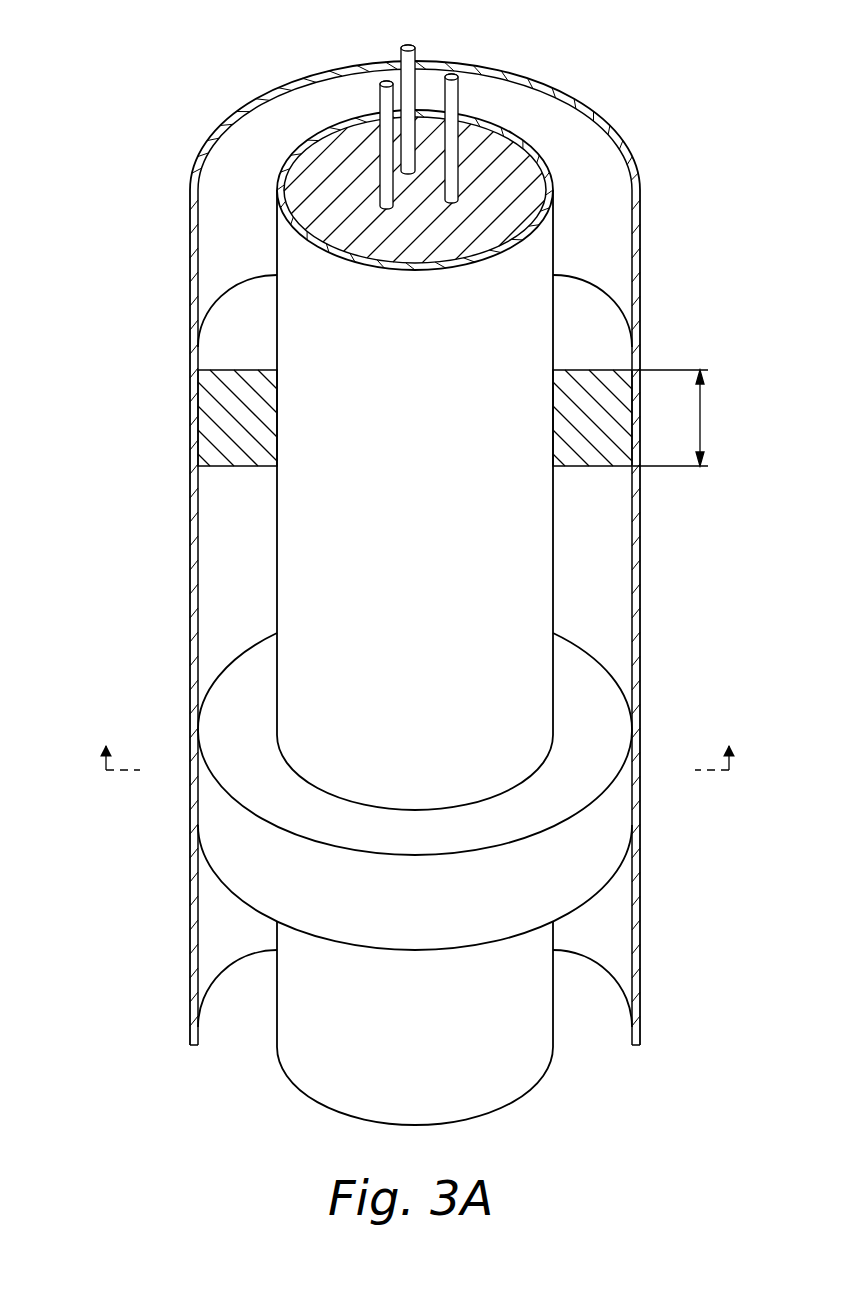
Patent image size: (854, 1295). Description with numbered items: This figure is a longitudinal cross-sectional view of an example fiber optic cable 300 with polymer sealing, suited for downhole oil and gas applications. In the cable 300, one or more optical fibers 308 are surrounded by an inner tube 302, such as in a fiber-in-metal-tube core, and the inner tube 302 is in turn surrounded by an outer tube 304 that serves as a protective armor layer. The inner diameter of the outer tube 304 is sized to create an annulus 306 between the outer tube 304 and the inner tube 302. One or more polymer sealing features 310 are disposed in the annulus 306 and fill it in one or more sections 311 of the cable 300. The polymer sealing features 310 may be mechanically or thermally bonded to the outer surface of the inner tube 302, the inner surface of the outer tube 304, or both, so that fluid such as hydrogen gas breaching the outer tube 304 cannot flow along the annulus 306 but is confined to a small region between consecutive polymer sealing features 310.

The fiber optic cable 300 is at (135, 59).
The inner tube 302 is at (335, 122).
The outer tube 304 is at (218, 130).
The annulus 306 is at (228, 243).
The optical fibers 308 is at (413, 47).
The polymer sealing features 310 is at (242, 328).
The sections 311 is at (702, 418).